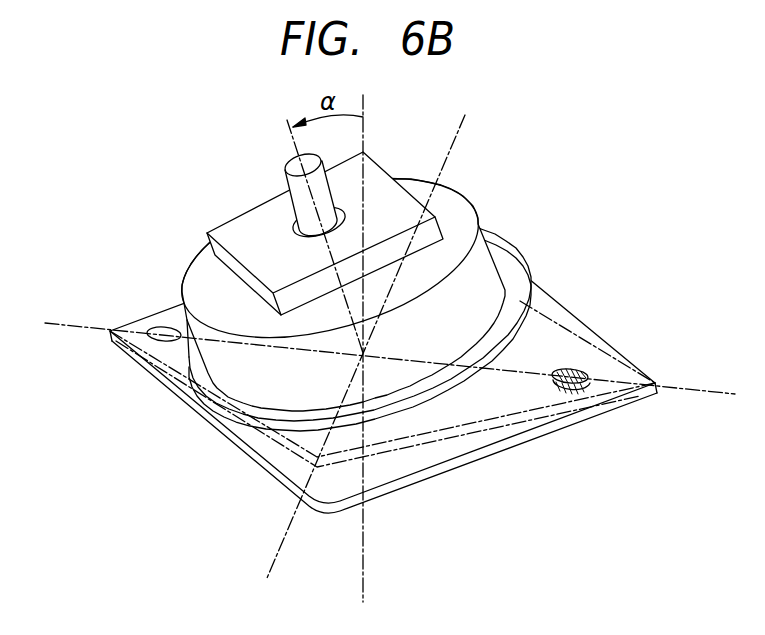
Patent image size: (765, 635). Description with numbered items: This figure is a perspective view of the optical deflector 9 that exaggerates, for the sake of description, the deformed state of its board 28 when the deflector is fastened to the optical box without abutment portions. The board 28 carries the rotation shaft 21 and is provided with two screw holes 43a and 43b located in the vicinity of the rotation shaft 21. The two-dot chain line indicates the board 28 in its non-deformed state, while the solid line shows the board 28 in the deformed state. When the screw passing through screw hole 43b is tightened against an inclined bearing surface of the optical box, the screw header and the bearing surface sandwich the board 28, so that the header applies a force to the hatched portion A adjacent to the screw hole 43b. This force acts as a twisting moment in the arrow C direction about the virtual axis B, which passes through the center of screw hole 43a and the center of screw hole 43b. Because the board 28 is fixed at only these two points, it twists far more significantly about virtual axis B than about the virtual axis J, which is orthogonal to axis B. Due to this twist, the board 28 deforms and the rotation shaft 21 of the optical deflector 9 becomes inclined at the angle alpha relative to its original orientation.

The optical deflector 9 is at (505, 195).
The rotation shaft 21 is at (290, 162).
The board 28 is at (442, 418).
The screw hole 43a is at (163, 328).
The screw hole 43b is at (568, 370).
The hatched portion A is at (572, 393).
The virtual axis B is at (672, 385).
The arrow direction C is at (727, 383).
The virtual axis J is at (283, 533).